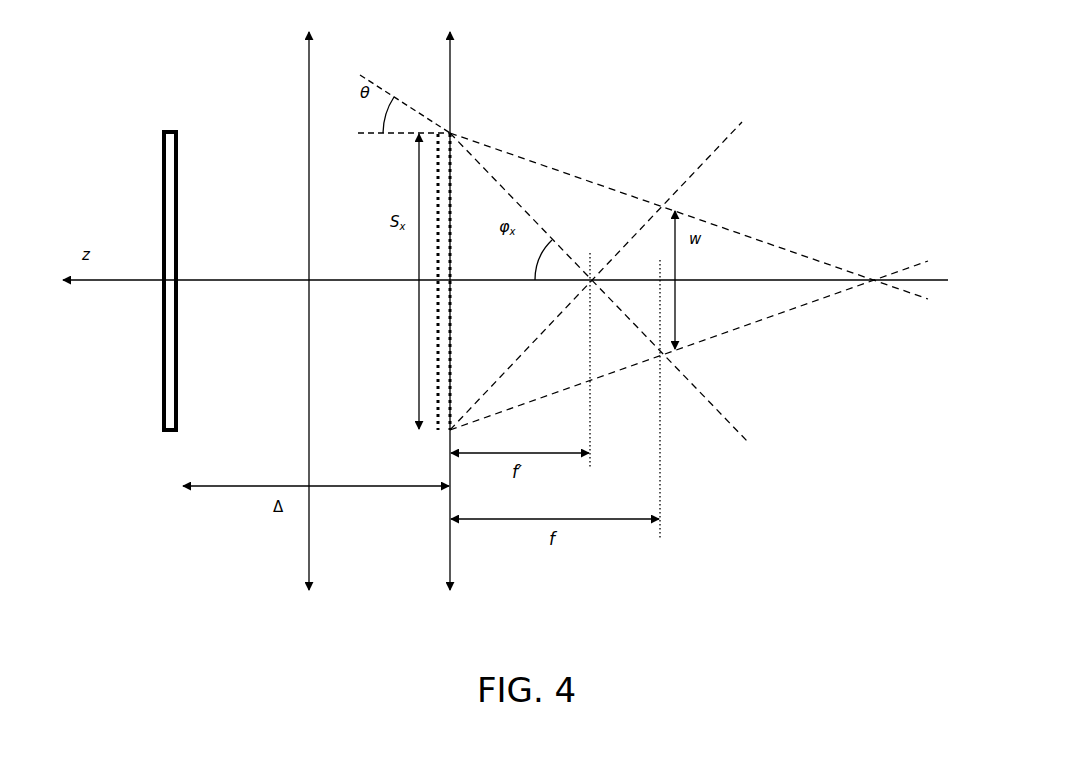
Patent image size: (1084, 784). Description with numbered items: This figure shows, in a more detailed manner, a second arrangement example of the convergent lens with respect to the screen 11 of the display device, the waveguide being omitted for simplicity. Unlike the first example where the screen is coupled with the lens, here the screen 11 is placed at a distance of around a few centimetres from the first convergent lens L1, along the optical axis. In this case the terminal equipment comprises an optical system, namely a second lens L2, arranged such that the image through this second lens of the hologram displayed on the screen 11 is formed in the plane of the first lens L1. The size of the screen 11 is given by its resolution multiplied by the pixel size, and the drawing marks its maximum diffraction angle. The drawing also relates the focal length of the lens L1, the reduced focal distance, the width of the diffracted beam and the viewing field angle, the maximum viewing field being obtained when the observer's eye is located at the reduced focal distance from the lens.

The screen 11 is at (177, 434).
The first lens L1 is at (433, 311).
The second lens L2 is at (287, 311).